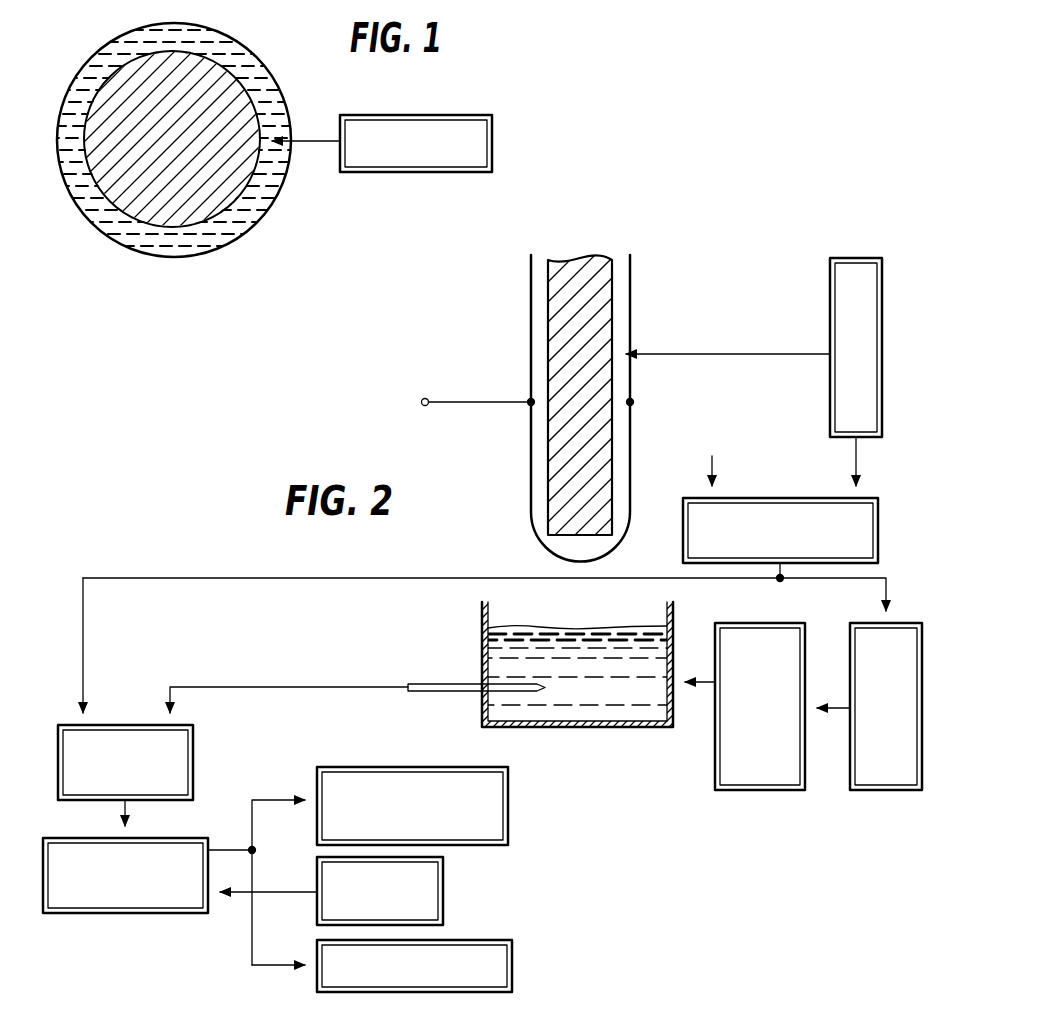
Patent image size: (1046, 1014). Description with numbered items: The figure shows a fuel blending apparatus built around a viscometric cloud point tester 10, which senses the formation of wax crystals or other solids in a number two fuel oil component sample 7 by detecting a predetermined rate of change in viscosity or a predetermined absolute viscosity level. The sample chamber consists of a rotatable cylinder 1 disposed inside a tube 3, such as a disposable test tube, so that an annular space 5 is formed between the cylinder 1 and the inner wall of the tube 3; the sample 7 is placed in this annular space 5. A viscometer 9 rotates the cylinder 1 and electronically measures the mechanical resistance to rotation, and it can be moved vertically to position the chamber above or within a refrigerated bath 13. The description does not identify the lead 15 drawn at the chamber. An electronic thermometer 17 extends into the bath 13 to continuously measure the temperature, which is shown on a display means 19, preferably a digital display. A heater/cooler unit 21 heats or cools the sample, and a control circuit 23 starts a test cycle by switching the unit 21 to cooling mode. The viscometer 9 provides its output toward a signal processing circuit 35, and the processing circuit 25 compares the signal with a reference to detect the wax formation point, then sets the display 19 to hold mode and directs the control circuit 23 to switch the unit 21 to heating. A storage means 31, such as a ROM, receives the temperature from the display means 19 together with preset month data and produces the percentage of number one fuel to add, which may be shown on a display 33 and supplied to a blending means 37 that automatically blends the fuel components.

In FIG. 1, the rotatable cylinder 1 is at (90, 176).
In FIG. 2, the rotatable cylinder 1 is at (614, 299).
In FIG. 1, the tube 3 is at (255, 54).
In FIG. 1, the annular space 5 is at (273, 186).
In FIG. 1, the No. 2 fuel oil component sample 7 is at (178, 246).
In FIG. 2, the viscometer 9 is at (830, 300).
In FIG. 1, the viscometric cloud point tester 10 is at (76, 33).
In FIG. 2, the viscometric cloud point tester 10 is at (762, 255).
In FIG. 2, the refrigerated bath 13 is at (482, 627).
In FIG. 2, the temperature sensor lead 15 is at (476, 400).
In FIG. 2, the electronic thermometer 17 is at (426, 682).
In FIG. 2, the display means 19 is at (193, 768).
In FIG. 2, the heater/cooler unit 21 is at (730, 622).
In FIG. 2, the control circuit 23 is at (860, 622).
In FIG. 2, the processing circuit 25 is at (878, 528).
In FIG. 2, the storage means 31 is at (195, 838).
In FIG. 2, the display 33 is at (460, 767).
In FIG. 2, the signal processing circuit 35 is at (443, 892).
In FIG. 2, the blending means 37 is at (316, 946).